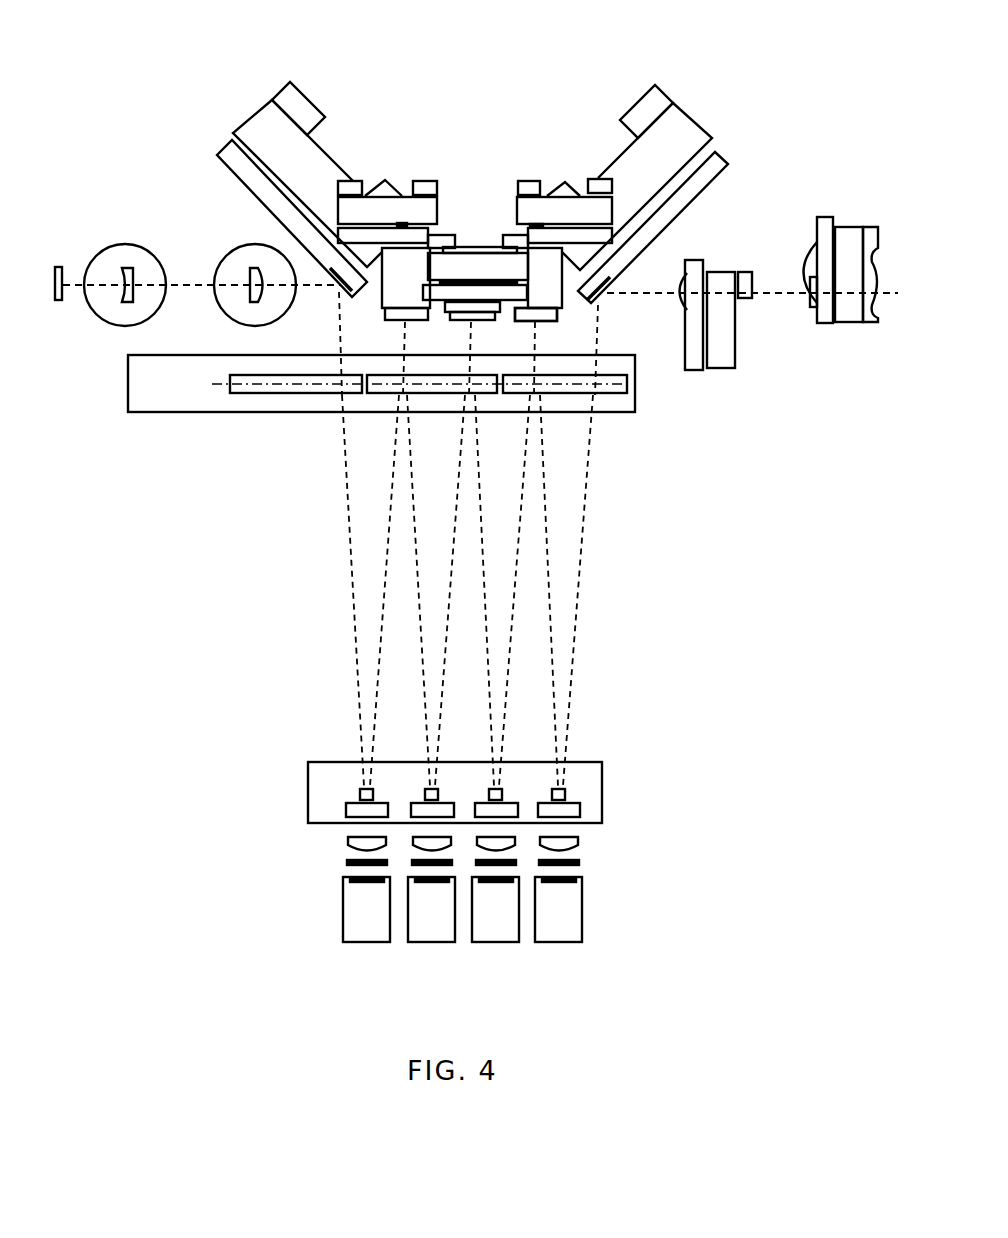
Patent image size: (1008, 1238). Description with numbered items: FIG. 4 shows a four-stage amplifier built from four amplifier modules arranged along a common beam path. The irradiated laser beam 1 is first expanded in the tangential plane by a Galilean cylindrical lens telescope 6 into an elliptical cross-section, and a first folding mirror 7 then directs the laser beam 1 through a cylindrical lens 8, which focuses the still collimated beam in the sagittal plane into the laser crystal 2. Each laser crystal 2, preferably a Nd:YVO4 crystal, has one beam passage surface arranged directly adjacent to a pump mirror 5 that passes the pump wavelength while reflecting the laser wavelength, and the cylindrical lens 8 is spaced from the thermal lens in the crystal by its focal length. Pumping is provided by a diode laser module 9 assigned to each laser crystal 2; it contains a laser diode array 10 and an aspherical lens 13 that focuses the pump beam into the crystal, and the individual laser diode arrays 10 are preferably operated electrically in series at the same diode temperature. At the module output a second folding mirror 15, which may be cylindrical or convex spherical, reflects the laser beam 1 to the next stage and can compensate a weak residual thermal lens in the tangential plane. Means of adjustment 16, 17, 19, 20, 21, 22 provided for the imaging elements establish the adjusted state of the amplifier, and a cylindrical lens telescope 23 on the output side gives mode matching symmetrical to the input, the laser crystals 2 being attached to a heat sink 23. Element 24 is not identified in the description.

The laser beam 1 is at (767, 295).
The laser crystal 2 is at (568, 797).
The pump mirror 5 is at (582, 812).
The Galilean cylindrical lens telescope 6 is at (781, 302).
The first folding mirror 7 is at (613, 282).
The cylindrical lens 8 is at (312, 395).
The diode laser module 9 is at (461, 885).
The laser diode array 10 is at (572, 878).
The aspherical lens 13 is at (654, 187).
The second folding mirror 15 is at (553, 322).
The means of adjustment 16 is at (853, 226).
The means of adjustment 17 is at (716, 270).
The means of adjustment 19 is at (548, 194).
The means of adjustment 20 is at (466, 244).
The means of adjustment 21 is at (388, 202).
The means of adjustment 22 is at (269, 121).
The cylindrical lens telescope 23 is at (90, 246).
The detector unit 24 is at (449, 761).